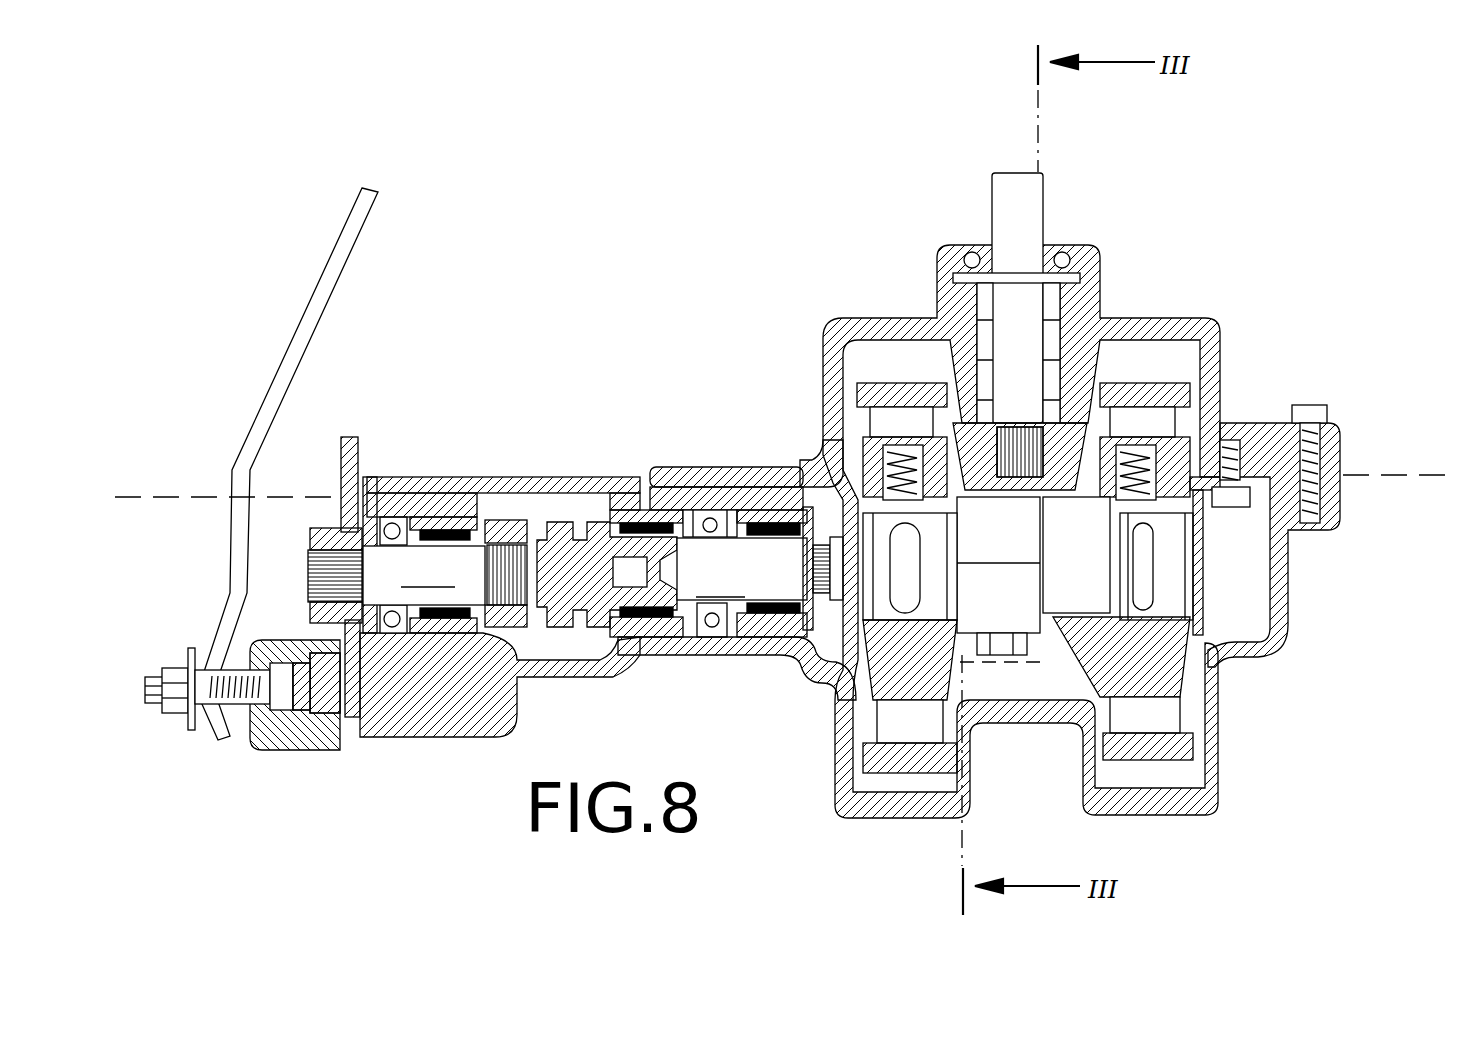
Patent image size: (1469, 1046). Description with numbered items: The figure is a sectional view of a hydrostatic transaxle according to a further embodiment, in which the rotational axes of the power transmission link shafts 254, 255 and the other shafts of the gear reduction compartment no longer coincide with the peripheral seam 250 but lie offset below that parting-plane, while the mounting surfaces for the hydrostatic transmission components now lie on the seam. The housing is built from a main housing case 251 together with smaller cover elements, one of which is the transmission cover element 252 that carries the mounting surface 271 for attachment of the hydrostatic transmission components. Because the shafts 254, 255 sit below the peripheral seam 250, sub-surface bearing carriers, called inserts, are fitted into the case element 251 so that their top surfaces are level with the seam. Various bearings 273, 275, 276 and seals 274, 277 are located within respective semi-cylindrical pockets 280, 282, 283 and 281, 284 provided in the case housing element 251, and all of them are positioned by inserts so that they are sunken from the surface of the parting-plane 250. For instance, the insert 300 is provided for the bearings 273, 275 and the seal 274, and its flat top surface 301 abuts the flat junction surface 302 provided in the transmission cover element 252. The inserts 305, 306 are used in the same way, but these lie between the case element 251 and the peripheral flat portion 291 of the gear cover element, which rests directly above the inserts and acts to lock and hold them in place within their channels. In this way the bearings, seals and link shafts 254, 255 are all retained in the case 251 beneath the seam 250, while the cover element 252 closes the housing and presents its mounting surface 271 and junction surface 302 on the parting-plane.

The peripheral seam 250 is at (145, 497).
The main housing case 251 is at (407, 680).
The housing cover element 252 is at (877, 325).
The power transmission link shaft 254 is at (742, 569).
The power transmission link shaft 255 is at (424, 575).
The mounting surface 271 is at (1262, 475).
The bearing 273 is at (757, 640).
The seal 274 is at (708, 515).
The bearing 275 is at (637, 640).
The bearing 276 is at (458, 515).
The seal 277 is at (381, 505).
The semi-cylindrical pocket 280 is at (807, 650).
The semi-cylindrical pocket 281 is at (713, 640).
The semi-cylindrical pocket 282 is at (655, 642).
The semi-cylindrical pocket 283 is at (490, 630).
The semi-cylindrical pocket 284 is at (373, 745).
The peripheral flat portion 291 is at (540, 477).
The insert 300 is at (742, 500).
The flat top surface 301 is at (782, 512).
The flat junction surface 302 is at (668, 500).
The insert 305 is at (625, 497).
The insert 306 is at (399, 495).